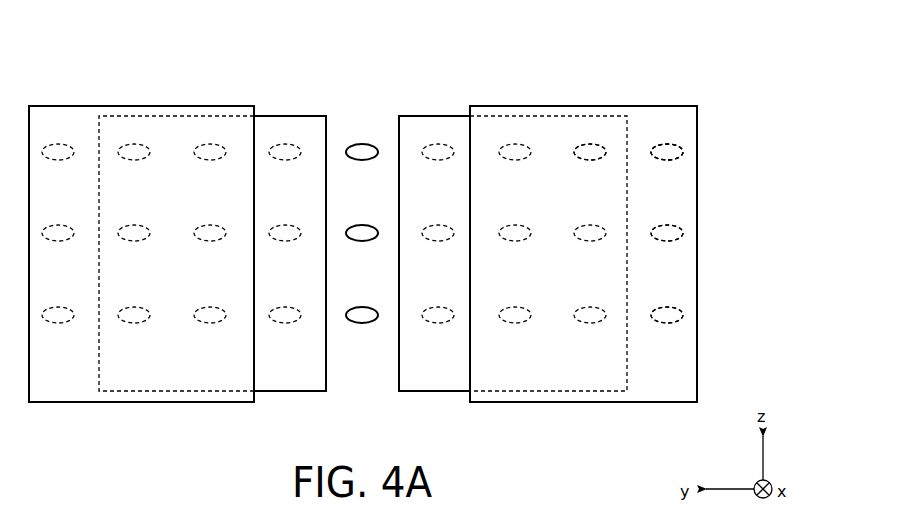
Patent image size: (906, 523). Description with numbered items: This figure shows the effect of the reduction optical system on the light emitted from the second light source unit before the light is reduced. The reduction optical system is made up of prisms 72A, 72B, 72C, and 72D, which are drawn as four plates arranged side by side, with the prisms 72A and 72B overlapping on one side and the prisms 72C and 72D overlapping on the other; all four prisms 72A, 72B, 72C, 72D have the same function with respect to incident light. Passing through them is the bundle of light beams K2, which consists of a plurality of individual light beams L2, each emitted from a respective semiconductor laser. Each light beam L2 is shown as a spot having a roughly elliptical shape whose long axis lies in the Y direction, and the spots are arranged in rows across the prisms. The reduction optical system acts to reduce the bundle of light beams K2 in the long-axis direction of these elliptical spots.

The prism 72A is at (520, 106).
The prism 72B is at (427, 116).
The prism 72C is at (278, 116).
The prism 72D is at (93, 106).
The light beam L2 is at (671, 148).
The bundle of light beams K2 is at (699, 153).